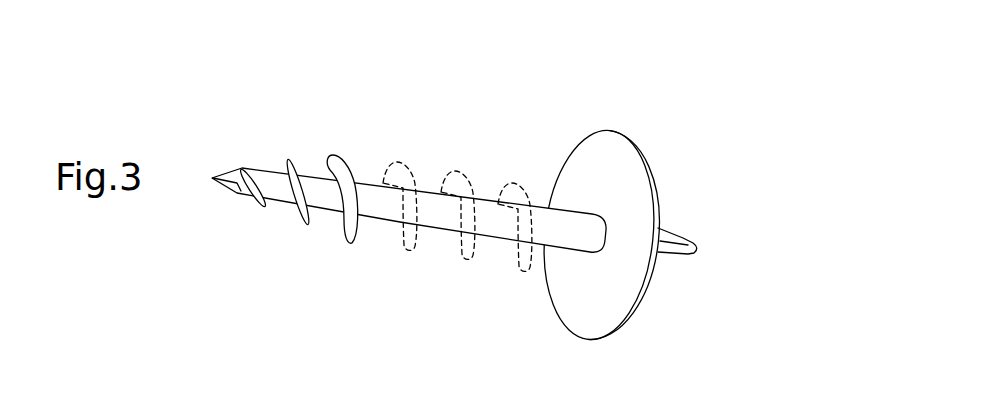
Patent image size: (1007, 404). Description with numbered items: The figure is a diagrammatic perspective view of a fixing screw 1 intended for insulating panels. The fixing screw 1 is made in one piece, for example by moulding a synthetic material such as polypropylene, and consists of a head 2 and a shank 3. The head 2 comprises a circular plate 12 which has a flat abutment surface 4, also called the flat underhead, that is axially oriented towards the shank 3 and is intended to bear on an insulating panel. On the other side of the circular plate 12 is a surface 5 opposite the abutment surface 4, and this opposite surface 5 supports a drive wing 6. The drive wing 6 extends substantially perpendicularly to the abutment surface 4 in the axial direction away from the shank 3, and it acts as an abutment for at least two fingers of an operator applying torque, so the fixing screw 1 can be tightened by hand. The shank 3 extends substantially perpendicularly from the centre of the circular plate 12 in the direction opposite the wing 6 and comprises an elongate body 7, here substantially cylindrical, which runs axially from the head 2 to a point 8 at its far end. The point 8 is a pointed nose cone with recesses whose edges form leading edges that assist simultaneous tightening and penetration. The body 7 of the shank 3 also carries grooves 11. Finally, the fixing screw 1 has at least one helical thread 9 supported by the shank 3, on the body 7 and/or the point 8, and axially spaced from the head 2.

The fixing screw 1 is at (266, 105).
The head 2 is at (600, 107).
The shank 3 is at (437, 157).
The flat abutment surface 4 is at (578, 306).
The surface opposite the abutment surface 5 is at (648, 168).
The drive wing 6 is at (677, 254).
The elongate body 7 is at (377, 240).
The point 8 is at (241, 194).
The helical thread 9 is at (341, 228).
The grooves 11 is at (505, 225).
The circular plate 12 is at (546, 164).